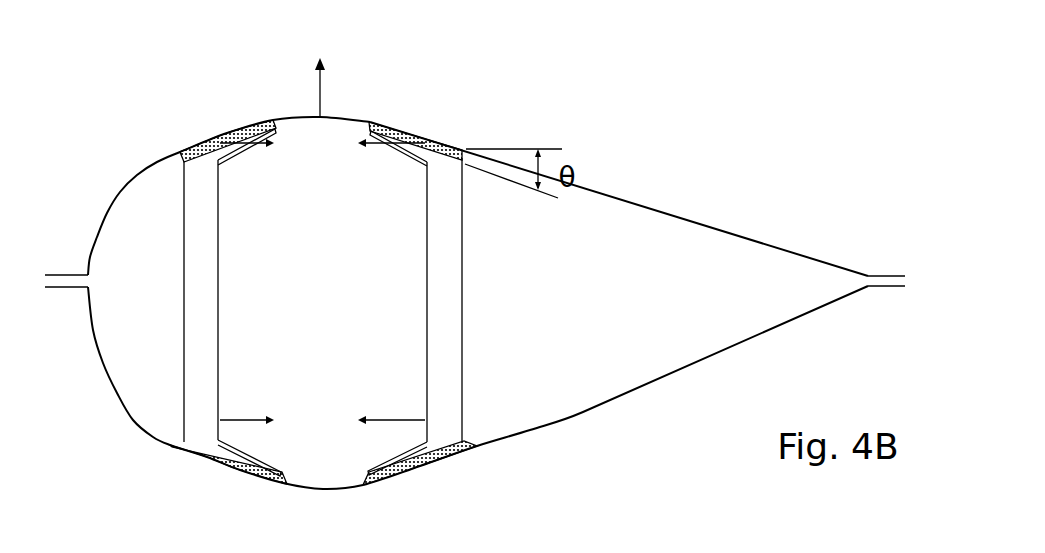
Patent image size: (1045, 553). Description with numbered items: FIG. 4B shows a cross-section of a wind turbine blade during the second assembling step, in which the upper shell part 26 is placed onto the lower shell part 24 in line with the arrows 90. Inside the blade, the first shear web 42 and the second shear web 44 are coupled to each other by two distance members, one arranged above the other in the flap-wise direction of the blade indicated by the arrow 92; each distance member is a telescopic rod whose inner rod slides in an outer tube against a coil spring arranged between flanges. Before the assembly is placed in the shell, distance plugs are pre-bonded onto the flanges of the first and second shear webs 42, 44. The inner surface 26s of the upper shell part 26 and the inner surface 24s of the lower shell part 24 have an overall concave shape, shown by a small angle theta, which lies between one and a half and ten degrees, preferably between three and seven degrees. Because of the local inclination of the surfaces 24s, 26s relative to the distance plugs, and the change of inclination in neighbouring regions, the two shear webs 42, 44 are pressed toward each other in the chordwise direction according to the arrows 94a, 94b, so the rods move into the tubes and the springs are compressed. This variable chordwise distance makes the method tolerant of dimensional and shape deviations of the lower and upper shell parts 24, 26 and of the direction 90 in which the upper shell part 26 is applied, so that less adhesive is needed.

The lower shell part 24 is at (615, 404).
The inner surface of the lower shell part 24s is at (585, 403).
The upper shell part 26 is at (619, 222).
The inner surface of the upper shell part 26s is at (731, 245).
The first shear web 42 is at (202, 293).
The second shear web 44 is at (453, 303).
The direction of placing the upper shell part 90 is at (70, 258).
The flap-wise direction 92 is at (313, 70).
The chordwise direction arrow 94a is at (265, 296).
The chordwise direction arrow 94b is at (381, 297).